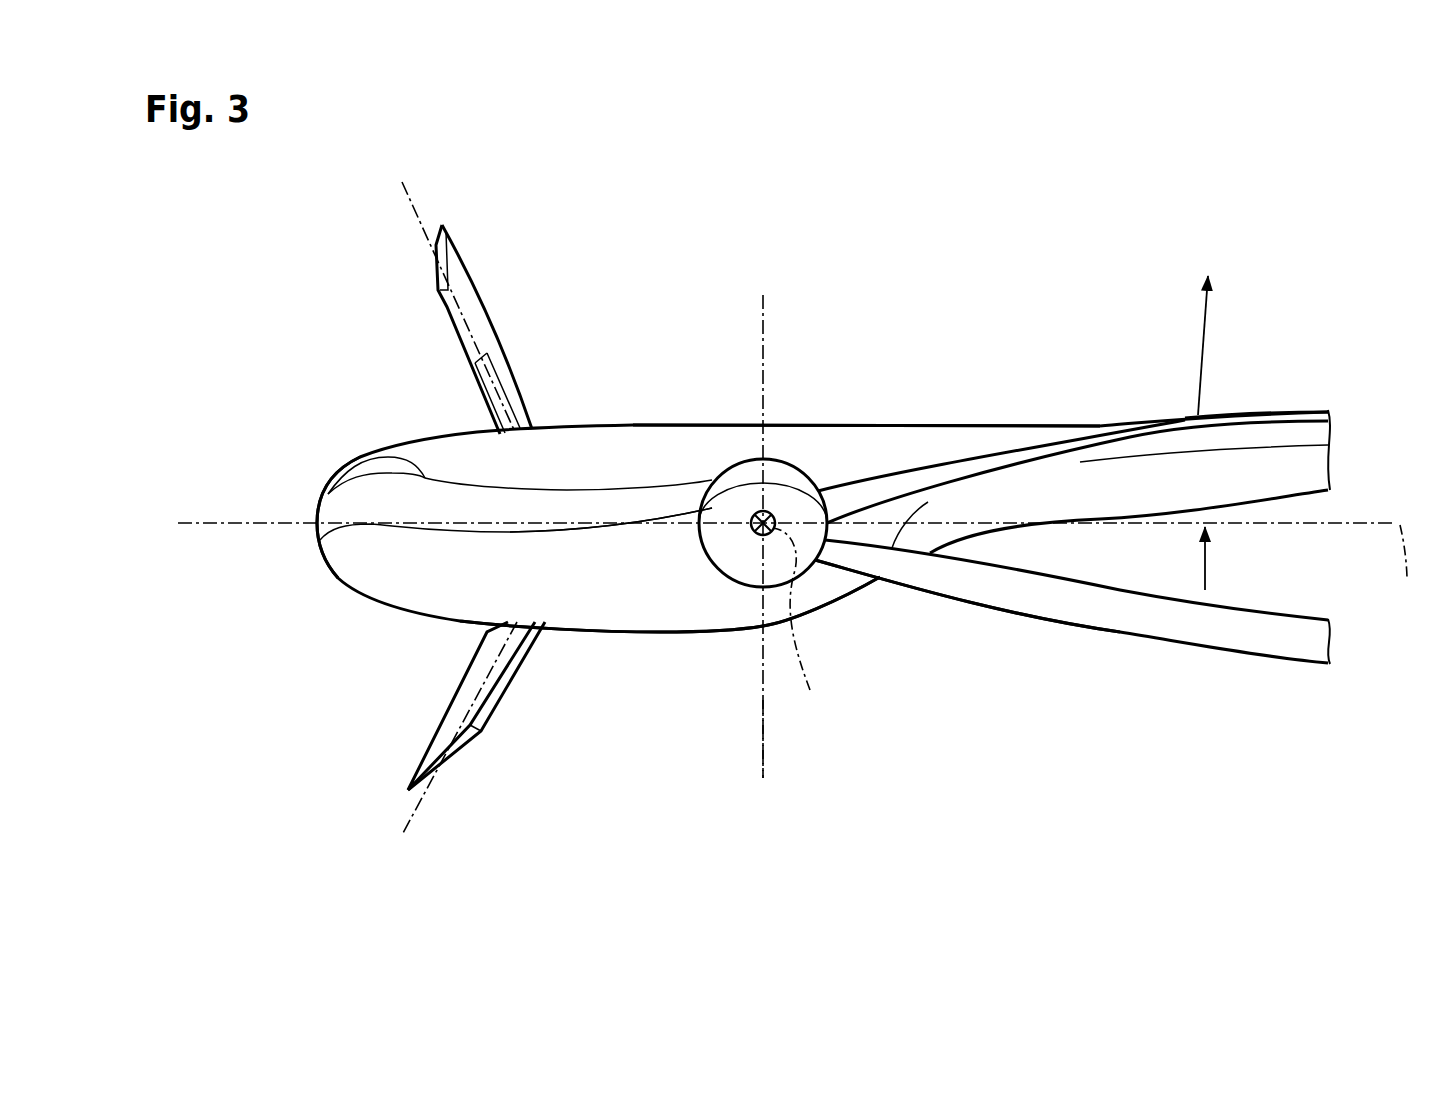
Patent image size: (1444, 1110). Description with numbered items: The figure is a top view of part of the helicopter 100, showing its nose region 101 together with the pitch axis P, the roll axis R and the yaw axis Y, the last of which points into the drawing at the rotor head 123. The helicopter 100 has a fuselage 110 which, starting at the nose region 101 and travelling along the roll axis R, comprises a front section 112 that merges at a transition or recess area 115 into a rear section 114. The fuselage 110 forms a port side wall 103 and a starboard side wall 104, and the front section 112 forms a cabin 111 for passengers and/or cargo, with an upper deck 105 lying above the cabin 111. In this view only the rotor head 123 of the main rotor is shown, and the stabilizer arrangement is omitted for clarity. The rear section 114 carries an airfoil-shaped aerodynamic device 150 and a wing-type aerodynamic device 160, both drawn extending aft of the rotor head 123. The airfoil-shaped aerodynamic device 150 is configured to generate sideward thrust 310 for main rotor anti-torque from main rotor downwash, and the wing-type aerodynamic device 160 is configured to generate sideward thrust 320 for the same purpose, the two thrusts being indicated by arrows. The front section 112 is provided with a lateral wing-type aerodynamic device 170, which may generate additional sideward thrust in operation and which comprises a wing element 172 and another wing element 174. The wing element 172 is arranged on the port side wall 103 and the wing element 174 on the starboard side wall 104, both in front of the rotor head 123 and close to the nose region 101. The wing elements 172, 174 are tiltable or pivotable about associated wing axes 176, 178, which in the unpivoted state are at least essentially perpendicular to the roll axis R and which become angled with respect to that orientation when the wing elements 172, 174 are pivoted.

The helicopter 100 is at (262, 285).
The nose region 101 is at (313, 517).
The port side wall 103 is at (708, 635).
The starboard side wall 104 is at (683, 423).
The upper deck 105 is at (647, 515).
The fuselage 110 is at (437, 460).
The cabin 111 is at (388, 548).
The front section 112 is at (628, 647).
The rear section 114 is at (1222, 407).
The transition or recess area 115 is at (878, 588).
The rotor head 123 is at (798, 460).
The airfoil-shaped aerodynamic device 150 is at (1157, 417).
The wing-type aerodynamic device 160 is at (1123, 612).
The lateral wing-type aerodynamic device 170 is at (430, 286).
The wing element 172 is at (470, 725).
The wing element 174 is at (463, 300).
The wing axis 176 is at (407, 822).
The wing axis 178 is at (420, 215).
The sideward thrust 310 is at (1210, 313).
The sideward thrust 320 is at (1203, 572).
The yaw axis Y is at (800, 625).
The pitch axis P is at (763, 765).
The roll axis R is at (1410, 570).